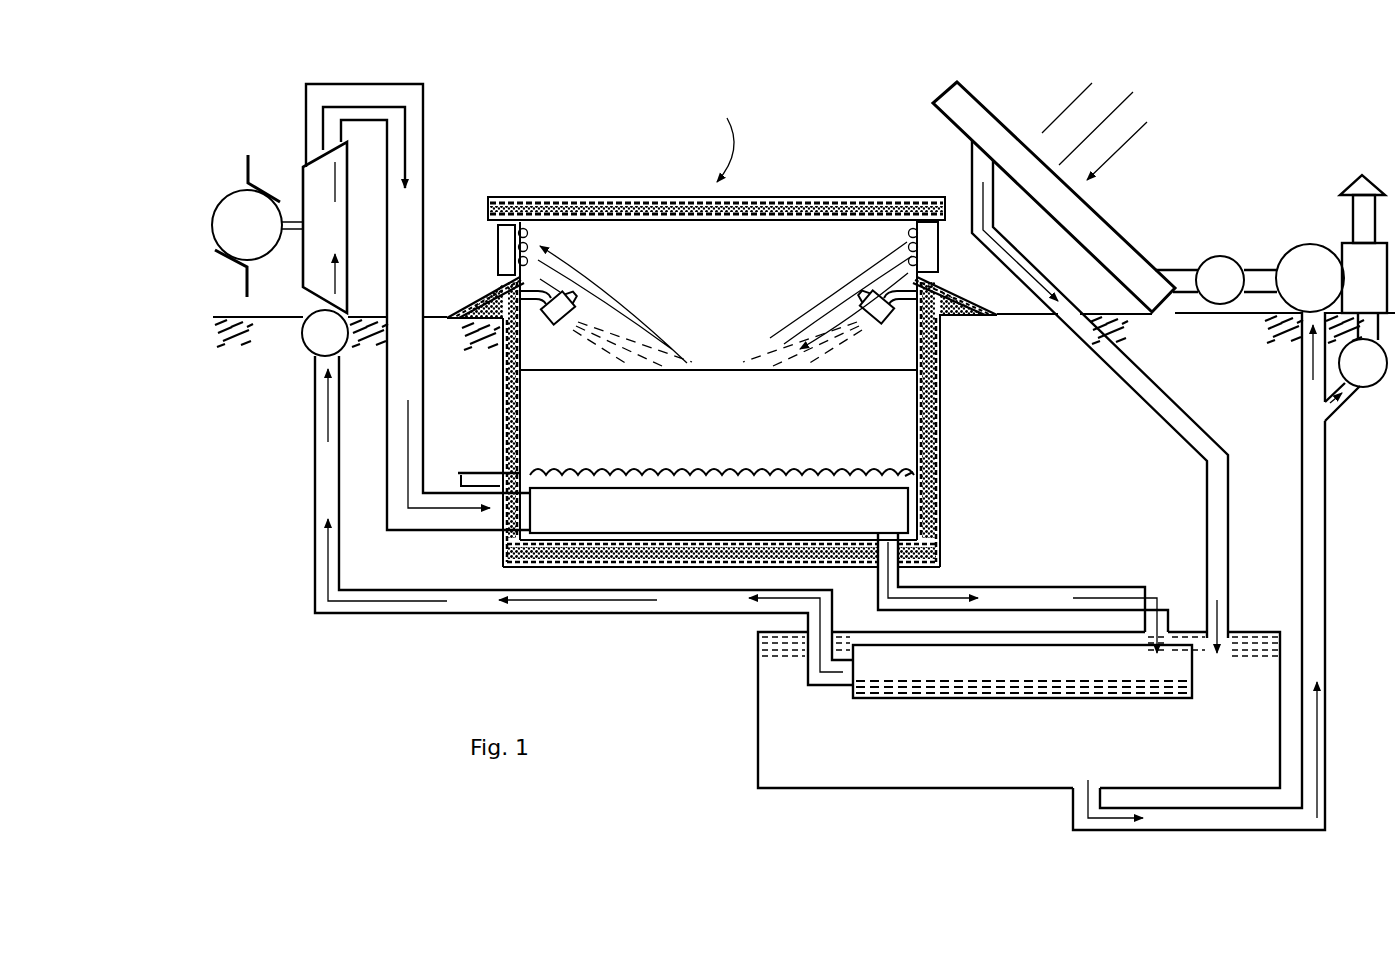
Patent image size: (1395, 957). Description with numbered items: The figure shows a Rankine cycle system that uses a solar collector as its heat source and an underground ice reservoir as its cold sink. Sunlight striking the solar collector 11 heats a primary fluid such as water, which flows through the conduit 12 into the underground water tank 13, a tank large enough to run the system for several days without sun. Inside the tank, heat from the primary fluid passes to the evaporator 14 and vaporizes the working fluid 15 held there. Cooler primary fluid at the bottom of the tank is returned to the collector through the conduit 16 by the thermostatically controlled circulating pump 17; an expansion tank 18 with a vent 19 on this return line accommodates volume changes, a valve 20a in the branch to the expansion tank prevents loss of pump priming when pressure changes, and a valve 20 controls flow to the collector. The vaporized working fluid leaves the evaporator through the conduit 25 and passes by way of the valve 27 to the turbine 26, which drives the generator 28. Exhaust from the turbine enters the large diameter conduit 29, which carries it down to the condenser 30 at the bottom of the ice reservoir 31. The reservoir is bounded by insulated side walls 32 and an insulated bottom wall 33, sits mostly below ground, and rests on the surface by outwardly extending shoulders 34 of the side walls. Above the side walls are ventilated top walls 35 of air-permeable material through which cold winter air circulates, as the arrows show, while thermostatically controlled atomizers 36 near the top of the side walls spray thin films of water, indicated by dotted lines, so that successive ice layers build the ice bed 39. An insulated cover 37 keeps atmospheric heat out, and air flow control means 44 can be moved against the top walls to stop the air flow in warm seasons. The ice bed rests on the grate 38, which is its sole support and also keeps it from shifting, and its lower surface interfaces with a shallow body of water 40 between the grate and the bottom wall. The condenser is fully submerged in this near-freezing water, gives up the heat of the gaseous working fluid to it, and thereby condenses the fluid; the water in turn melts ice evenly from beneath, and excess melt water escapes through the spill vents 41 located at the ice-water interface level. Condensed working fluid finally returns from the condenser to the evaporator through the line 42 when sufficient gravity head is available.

The solar collector 11 is at (1108, 236).
The conduit 12 is at (1120, 358).
The underground water tank 13 is at (874, 790).
The evaporator 14 is at (985, 673).
The working fluid 15 is at (1147, 688).
The conduit 16 is at (1302, 560).
The circulating pump 17 is at (1296, 254).
The expansion tank 18 is at (1367, 248).
The vent 19 is at (1357, 211).
The valve 20 is at (1218, 258).
The valve 20a is at (1363, 392).
The conduit 25 is at (458, 613).
The turbine 26 is at (336, 237).
The valve 27 is at (308, 346).
The generator 28 is at (258, 243).
The large diameter conduit 29 is at (423, 138).
The condenser 30 is at (730, 523).
The ice reservoir 31 is at (715, 150).
The insulated side walls 32 is at (503, 396).
The insulated bottom wall 33 is at (835, 567).
The shoulders 34 is at (490, 296).
The ventilated top walls 35 is at (533, 259).
The atomizers 36 is at (550, 316).
The insulated cover 37 is at (818, 197).
The grate 38 is at (775, 468).
The ice bed 39 is at (740, 423).
The shallow body of water 40 is at (895, 470).
The spill vents 41 is at (488, 472).
The line 42 is at (1021, 586).
The air flow control means 44 is at (497, 248).